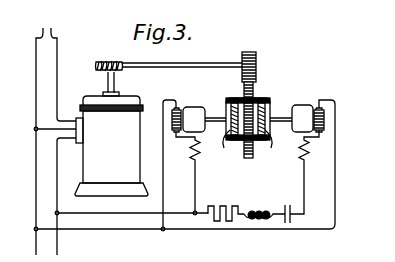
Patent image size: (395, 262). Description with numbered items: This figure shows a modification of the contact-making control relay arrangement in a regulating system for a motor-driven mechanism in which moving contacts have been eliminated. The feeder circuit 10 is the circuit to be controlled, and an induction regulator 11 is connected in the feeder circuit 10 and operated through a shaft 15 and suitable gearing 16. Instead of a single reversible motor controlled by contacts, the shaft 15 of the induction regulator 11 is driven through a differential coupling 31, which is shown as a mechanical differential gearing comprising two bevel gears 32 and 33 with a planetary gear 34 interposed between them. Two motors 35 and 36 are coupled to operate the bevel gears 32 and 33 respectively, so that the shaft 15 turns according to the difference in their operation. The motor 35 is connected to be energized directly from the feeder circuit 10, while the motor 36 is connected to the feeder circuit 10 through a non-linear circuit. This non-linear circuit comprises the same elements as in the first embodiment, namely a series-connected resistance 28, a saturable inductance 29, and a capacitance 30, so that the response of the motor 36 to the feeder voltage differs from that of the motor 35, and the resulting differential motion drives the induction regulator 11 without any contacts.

The feeder circuit 10 is at (46, 133).
The induction regulator 11 is at (141, 154).
The shaft 15 is at (208, 63).
The gearing 16 is at (104, 60).
The resistance 28 is at (218, 206).
The saturable inductance 29 is at (255, 210).
The capacitance 30 is at (286, 205).
The differential coupling 31 is at (290, 78).
The bevel gear 32 is at (236, 144).
The bevel gear 33 is at (265, 144).
The planetary gear 34 is at (269, 101).
The motor 35 is at (194, 101).
The motor 36 is at (312, 104).